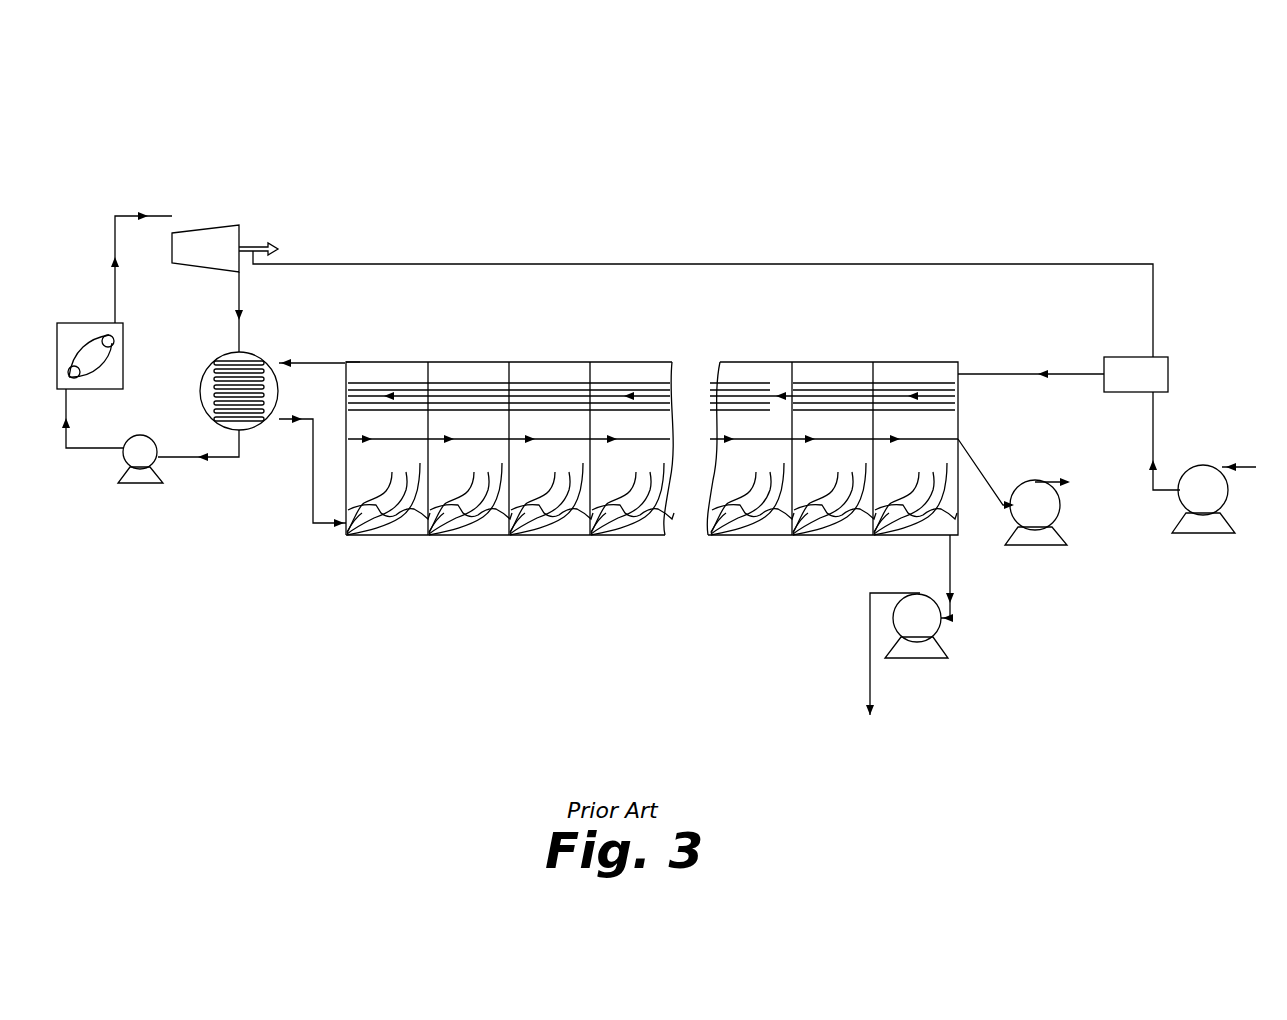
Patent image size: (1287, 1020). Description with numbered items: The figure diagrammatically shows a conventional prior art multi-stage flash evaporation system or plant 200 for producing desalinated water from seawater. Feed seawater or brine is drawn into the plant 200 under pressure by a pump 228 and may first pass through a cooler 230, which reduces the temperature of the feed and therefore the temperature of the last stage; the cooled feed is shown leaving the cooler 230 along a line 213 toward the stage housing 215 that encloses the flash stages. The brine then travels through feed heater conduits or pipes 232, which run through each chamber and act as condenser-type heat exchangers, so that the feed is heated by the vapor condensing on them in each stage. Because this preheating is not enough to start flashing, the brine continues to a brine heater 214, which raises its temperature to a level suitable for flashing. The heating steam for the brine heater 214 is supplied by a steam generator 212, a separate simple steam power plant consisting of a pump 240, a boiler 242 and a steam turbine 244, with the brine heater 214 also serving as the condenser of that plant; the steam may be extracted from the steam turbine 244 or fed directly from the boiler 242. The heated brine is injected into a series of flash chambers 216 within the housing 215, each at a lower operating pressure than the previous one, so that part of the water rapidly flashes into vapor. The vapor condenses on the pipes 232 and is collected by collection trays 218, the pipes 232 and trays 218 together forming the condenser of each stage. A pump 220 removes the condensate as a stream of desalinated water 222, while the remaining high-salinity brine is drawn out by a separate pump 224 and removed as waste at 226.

The MSF system or plant 200 is at (282, 152).
The steam generator 212 is at (168, 532).
The cooled feed line 213 is at (977, 373).
The brine heater 214 is at (253, 379).
The evaporator vessel 215 is at (347, 362).
The flash chambers 216 is at (910, 537).
The collection trays 218 is at (482, 438).
The pump 220 is at (1057, 548).
The stream of desalinated water 222 is at (1080, 466).
The pump 224 is at (937, 660).
The waste 226 is at (880, 671).
The pump 228 is at (1193, 533).
The cooler 230 is at (1168, 365).
The conduits or pipes 232 is at (540, 380).
The pump 240 is at (130, 482).
The boiler 242 is at (77, 323).
The steam turbine 244 is at (220, 272).